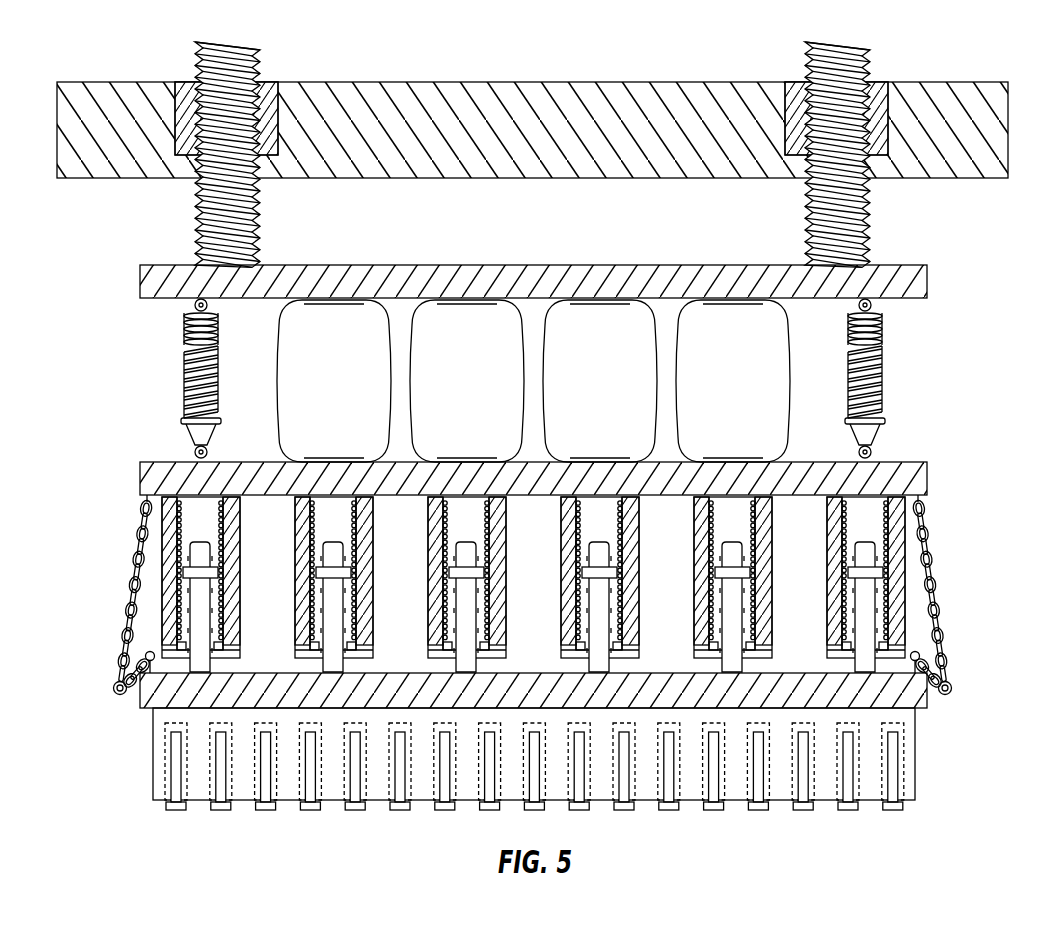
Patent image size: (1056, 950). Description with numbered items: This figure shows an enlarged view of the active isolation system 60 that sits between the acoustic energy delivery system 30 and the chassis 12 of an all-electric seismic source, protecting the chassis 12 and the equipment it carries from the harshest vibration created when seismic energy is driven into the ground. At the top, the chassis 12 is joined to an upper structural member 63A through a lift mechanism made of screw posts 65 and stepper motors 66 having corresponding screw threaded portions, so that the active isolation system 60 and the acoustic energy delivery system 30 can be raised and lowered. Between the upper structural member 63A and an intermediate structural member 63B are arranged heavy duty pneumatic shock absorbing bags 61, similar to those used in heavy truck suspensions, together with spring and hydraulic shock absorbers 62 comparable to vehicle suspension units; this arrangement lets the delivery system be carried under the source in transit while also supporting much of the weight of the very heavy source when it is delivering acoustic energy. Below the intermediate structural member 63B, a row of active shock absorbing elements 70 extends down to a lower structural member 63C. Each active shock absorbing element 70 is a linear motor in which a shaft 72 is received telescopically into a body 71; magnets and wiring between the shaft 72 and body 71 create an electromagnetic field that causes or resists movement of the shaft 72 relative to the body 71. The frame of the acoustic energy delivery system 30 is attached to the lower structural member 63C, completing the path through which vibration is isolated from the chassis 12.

The chassis 12 is at (524, 102).
The acoustic energy delivery system 30 is at (920, 758).
The active isolation system 60 is at (542, 492).
The pneumatic shock absorbing bags 61 is at (321, 394).
The spring and hydraulic shock absorbers 62 is at (183, 377).
The structural member 63A is at (140, 283).
The structural member 63B is at (140, 483).
The structural member 63C is at (140, 697).
The screw posts 65 is at (195, 52).
The stepper motors 66 is at (272, 90).
The active shock absorbing elements 70 is at (533, 583).
The body 71 is at (532, 570).
The shaft 72 is at (533, 607).